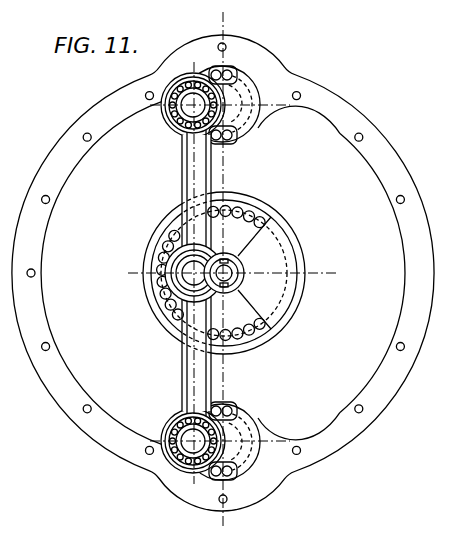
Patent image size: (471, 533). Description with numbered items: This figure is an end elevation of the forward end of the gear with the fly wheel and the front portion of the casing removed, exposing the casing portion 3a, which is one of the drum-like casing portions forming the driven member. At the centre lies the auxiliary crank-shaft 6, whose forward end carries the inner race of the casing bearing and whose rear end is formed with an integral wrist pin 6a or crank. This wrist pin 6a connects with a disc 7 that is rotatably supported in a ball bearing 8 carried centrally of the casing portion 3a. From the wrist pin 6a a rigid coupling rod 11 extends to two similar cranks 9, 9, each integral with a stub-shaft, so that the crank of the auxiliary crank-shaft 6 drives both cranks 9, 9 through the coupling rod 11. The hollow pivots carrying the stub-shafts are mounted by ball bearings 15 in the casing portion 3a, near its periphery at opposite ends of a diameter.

The casing portion 3a is at (223, 273).
The auxiliary crank-shaft 6 is at (246, 275).
The wrist pin 6a is at (188, 276).
The disc 7 is at (256, 336).
The ball bearing 8 is at (246, 216).
The crank 9 is at (247, 87).
The coupling rod 11 is at (182, 177).
The ball bearings 15 is at (233, 71).